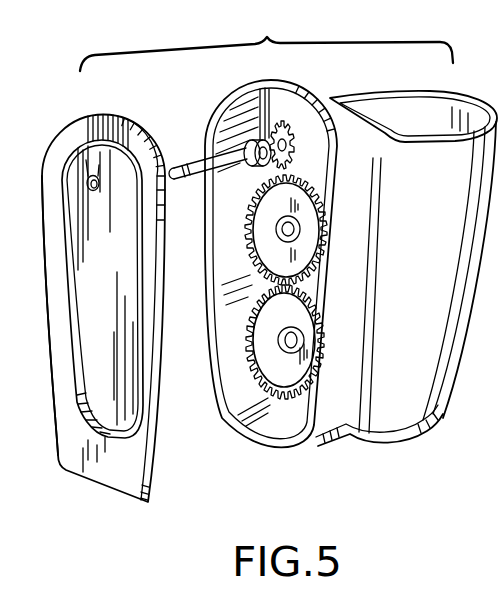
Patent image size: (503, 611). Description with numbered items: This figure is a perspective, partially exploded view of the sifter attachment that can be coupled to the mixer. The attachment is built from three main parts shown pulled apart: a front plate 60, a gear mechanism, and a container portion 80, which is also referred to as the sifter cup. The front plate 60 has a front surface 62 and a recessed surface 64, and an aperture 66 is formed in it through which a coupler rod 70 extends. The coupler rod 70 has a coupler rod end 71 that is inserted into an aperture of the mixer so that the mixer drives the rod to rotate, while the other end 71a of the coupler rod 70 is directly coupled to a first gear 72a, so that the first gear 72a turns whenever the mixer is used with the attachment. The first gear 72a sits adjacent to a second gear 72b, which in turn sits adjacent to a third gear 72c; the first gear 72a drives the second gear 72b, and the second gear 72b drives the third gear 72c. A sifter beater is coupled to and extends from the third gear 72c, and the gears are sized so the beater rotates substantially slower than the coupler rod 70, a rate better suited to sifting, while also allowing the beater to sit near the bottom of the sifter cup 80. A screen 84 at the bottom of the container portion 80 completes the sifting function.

The front plate 60 is at (70, 481).
The front surface 62 is at (62, 352).
The recessed surface 64 is at (110, 409).
The aperture 66 is at (90, 178).
The coupler rod 70 is at (192, 158).
The coupler rod end 71 is at (177, 183).
The other end of coupler rod 71a is at (258, 143).
The first gear 72a is at (283, 122).
The second gear 72b is at (268, 248).
The third gear 72c is at (273, 354).
The container portion 80 is at (449, 88).
The screen 84 is at (376, 449).